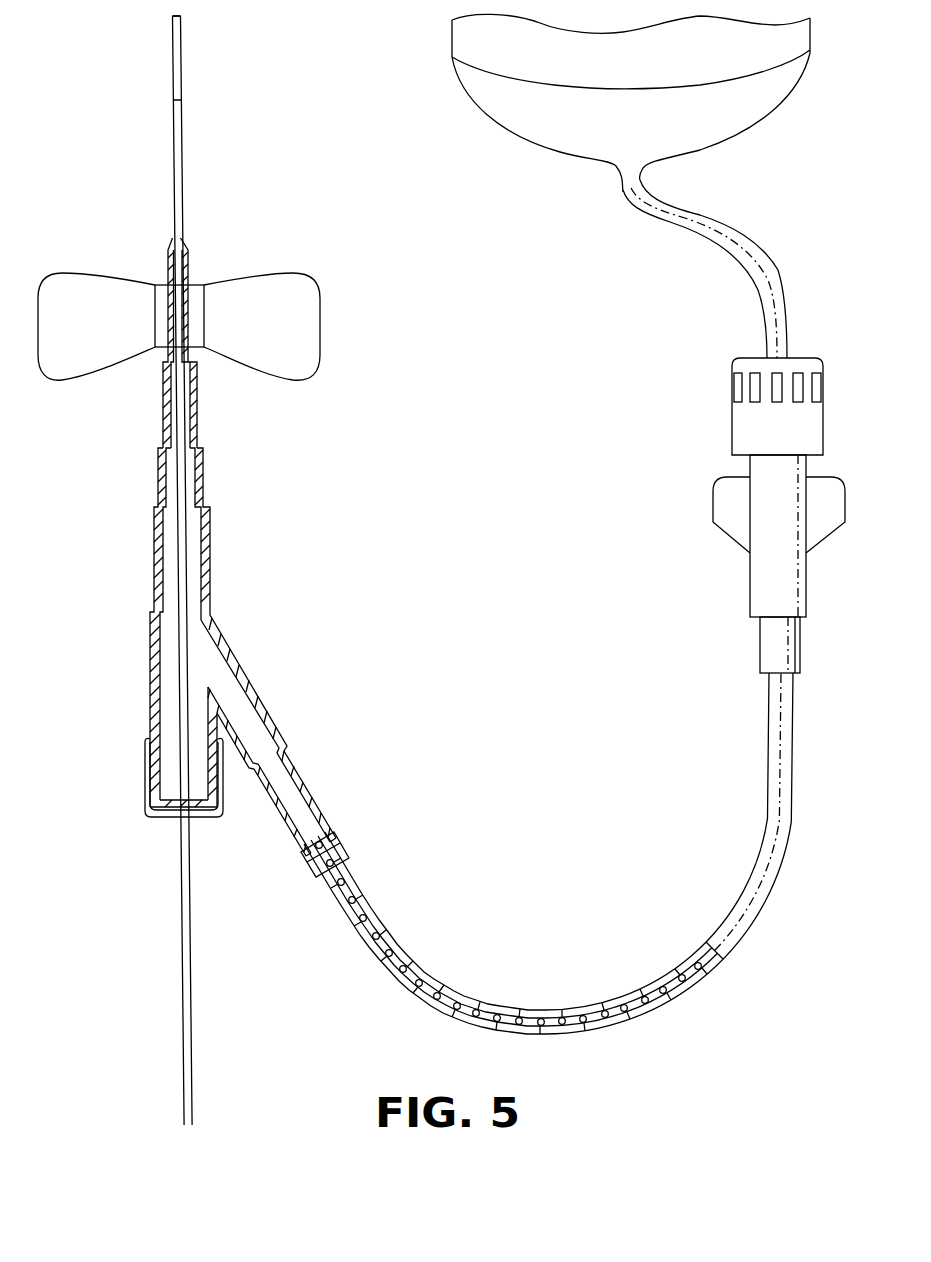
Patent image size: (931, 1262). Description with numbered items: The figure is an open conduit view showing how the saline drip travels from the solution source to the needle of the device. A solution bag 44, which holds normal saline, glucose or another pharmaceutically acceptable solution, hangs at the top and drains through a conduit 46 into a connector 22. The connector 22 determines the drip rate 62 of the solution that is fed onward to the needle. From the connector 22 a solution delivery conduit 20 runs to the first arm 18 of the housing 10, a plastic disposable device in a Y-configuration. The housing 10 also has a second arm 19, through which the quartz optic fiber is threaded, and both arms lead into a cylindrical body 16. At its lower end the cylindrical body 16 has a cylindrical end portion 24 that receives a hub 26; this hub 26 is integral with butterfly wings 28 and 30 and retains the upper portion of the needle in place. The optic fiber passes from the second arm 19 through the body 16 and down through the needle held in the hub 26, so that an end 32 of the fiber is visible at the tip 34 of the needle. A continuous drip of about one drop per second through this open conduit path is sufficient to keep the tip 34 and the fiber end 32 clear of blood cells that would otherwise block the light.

The housing 10 is at (250, 560).
The cylindrical body 16 is at (154, 555).
The first arm 18 is at (248, 677).
The second arm 19 is at (145, 780).
The solution delivery conduit 20 is at (425, 968).
The connector 22 is at (732, 425).
The cylindrical end portion 24 is at (163, 398).
The hub 26 is at (190, 315).
The butterfly wing 28 is at (322, 322).
The butterfly wing 30 is at (90, 273).
The end of optic fiber 32 is at (182, 24).
The needle tip 34 is at (172, 106).
The solution bag 44 is at (452, 30).
The conduit 46 is at (712, 238).
The drip rate 62 is at (572, 1020).